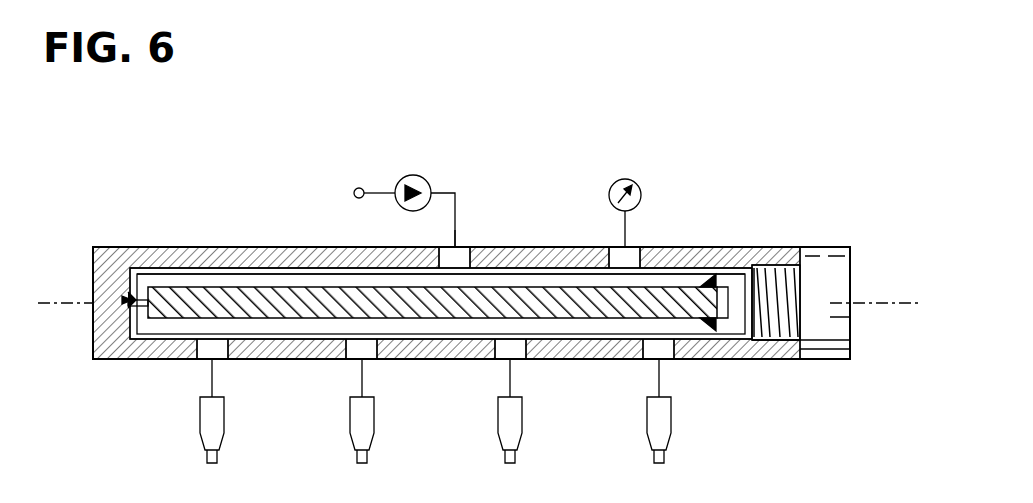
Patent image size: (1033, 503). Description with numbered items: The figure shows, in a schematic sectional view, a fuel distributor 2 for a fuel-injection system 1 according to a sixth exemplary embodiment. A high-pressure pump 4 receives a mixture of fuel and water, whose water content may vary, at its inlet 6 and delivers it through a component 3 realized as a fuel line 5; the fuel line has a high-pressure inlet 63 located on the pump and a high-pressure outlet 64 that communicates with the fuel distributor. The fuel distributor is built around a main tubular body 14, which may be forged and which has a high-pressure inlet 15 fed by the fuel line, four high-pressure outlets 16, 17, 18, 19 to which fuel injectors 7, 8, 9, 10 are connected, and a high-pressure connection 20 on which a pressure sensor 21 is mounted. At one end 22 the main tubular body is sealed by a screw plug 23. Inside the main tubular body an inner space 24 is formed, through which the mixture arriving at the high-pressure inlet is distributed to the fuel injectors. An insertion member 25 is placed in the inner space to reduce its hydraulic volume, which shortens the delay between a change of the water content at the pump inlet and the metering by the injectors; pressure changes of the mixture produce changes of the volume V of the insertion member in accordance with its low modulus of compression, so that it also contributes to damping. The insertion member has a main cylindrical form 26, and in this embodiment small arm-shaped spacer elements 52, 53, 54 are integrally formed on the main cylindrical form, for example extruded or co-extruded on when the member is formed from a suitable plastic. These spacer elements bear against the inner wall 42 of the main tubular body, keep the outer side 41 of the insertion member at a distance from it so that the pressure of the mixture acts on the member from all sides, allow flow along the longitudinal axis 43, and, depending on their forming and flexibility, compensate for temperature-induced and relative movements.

The fuel-injection system 1 is at (489, 277).
The fuel distributor 2 is at (489, 289).
The component 3 is at (489, 289).
The high-pressure pump 4 is at (412, 192).
The fuel line 5 is at (458, 205).
The inlet 6 is at (359, 188).
The fuel injector 7 is at (215, 415).
The fuel injector 8 is at (365, 415).
The fuel injector 9 is at (515, 415).
The fuel injector 10 is at (665, 415).
The main tubular body 14 is at (471, 262).
The high-pressure inlet 15 is at (470, 262).
The high-pressure outlet 16 is at (218, 350).
The high-pressure outlet 17 is at (368, 350).
The high-pressure outlet 18 is at (516, 350).
The high-pressure outlet 19 is at (665, 350).
The high-pressure connection 20 is at (630, 262).
The pressure sensor 21 is at (625, 180).
The end 22 is at (783, 352).
The screw plug 23 is at (820, 278).
The inner space 24 is at (740, 323).
The insertion member 25 is at (428, 310).
The main cylindrical form 26 is at (553, 290).
The outer side 41 is at (200, 283).
The inner wall 42 is at (268, 280).
The longitudinal axis 43 is at (50, 302).
The spacer element 52 is at (128, 292).
The spacer element 53 is at (712, 280).
The spacer element 54 is at (720, 332).
The high-pressure inlet 63 is at (432, 188).
The high-pressure outlet 64 is at (462, 246).
The volume V is at (586, 302).